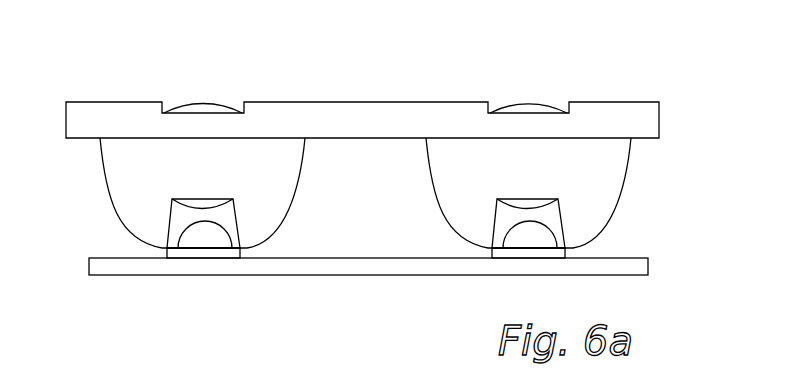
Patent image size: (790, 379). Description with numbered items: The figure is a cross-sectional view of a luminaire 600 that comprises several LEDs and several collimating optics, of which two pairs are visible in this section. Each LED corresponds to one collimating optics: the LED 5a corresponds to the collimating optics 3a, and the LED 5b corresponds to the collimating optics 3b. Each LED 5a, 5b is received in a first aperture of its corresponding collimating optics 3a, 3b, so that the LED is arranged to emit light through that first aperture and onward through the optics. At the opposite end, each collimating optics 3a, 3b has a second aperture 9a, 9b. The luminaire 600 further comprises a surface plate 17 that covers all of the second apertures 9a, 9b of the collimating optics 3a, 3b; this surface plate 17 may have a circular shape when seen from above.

The luminaire 600 is at (667, 75).
The surface plate 17 is at (103, 108).
The second aperture 9a is at (197, 139).
The second aperture 9b is at (521, 139).
The collimating optics 3a is at (112, 197).
The collimating optics 3b is at (623, 185).
The LED 5a is at (202, 233).
The LED 5b is at (526, 233).